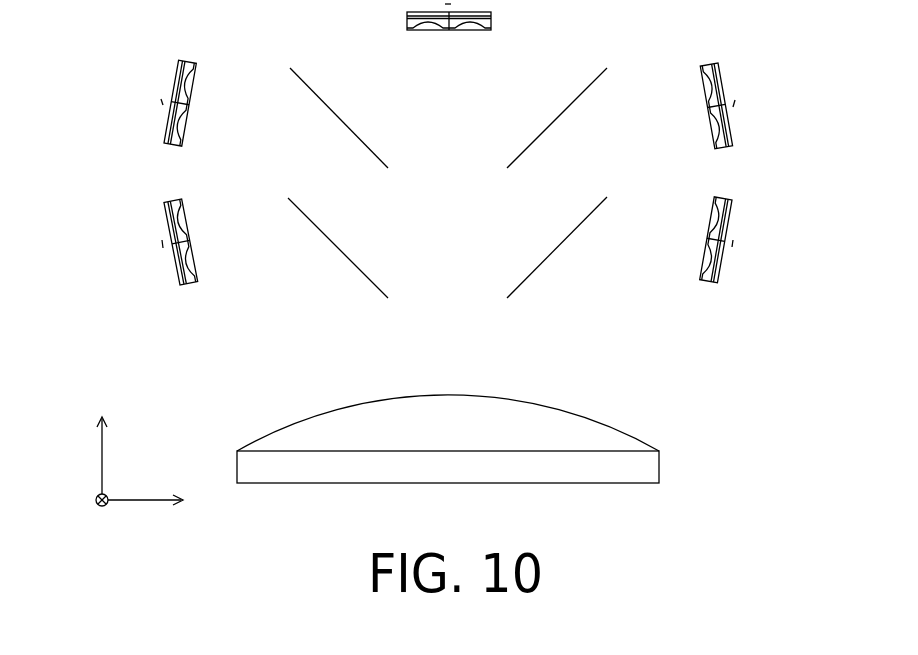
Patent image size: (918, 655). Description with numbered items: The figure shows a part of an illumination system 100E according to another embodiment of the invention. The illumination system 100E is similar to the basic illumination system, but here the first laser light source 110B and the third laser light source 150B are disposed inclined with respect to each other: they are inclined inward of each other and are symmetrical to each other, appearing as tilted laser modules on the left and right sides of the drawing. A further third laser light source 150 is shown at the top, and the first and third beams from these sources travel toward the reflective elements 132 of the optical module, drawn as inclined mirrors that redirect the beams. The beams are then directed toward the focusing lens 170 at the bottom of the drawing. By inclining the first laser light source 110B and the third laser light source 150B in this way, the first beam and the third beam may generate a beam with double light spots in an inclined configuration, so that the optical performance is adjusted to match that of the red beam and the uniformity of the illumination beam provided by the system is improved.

The third laser light source 150 is at (490, 27).
The third laser light source 150B is at (176, 76).
The first laser light source 110B is at (164, 221).
The reflective element 132 is at (375, 163).
The focusing lens 170 is at (653, 467).
The illumination system 100E is at (449, 271).